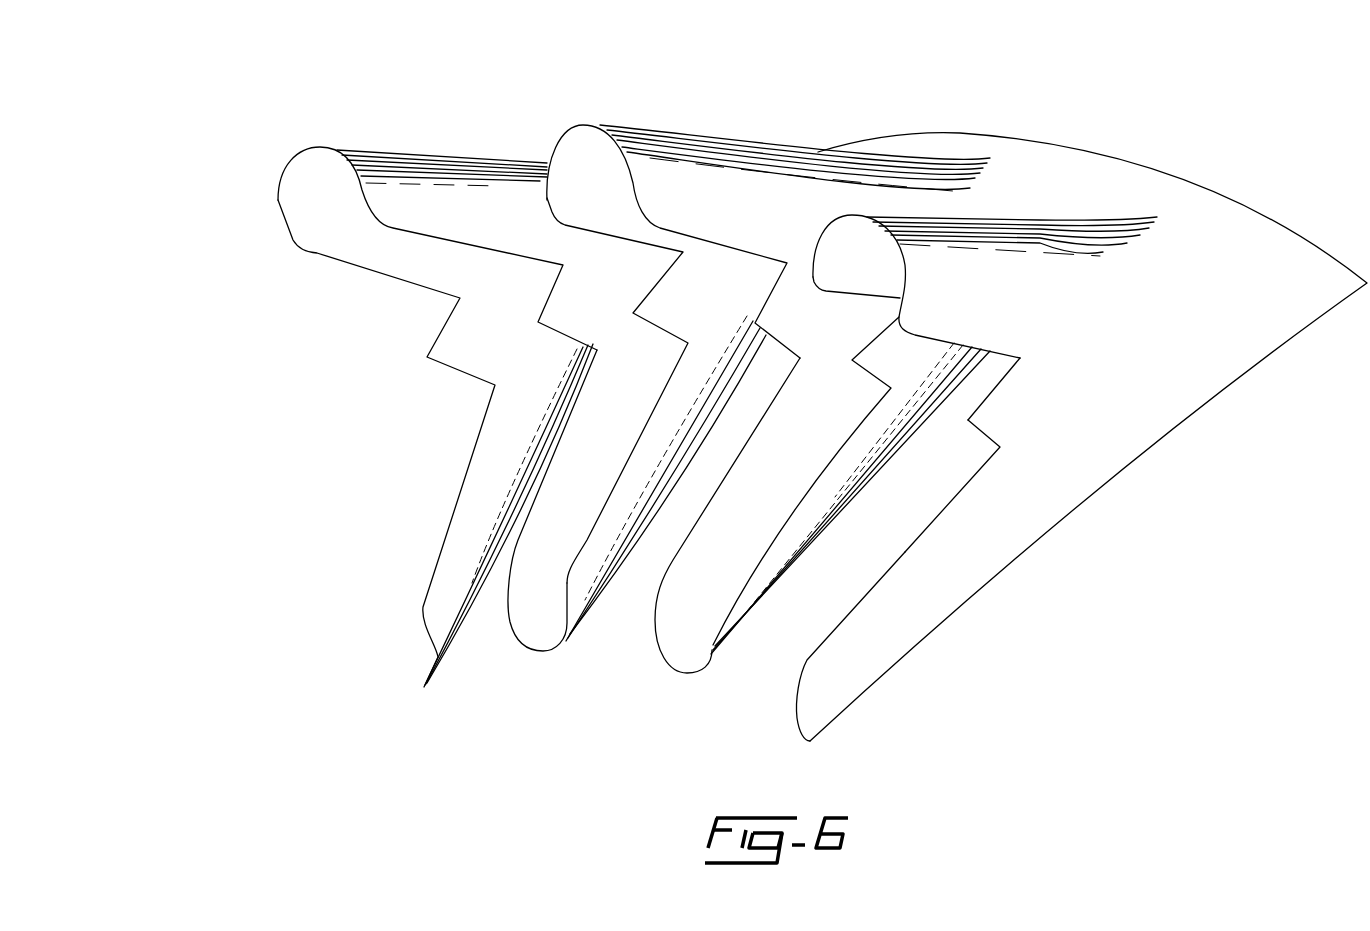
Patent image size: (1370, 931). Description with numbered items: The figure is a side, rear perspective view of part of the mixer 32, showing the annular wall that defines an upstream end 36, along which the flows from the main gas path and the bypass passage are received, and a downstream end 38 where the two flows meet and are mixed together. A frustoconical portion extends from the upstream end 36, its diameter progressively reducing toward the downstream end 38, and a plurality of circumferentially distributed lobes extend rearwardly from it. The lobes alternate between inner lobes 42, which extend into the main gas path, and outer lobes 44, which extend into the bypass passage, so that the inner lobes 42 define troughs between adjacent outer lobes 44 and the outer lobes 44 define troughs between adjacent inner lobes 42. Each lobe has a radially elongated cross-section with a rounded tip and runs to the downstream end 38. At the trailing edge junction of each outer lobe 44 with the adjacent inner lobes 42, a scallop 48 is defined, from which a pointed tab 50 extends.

The mixer 32 is at (563, 346).
The upstream end 36 is at (1220, 190).
The downstream end 38 is at (289, 151).
The inner lobes 42 is at (812, 697).
The outer lobes 44 is at (942, 255).
The scallop 48 is at (992, 370).
The pointed tab 50 is at (987, 420).